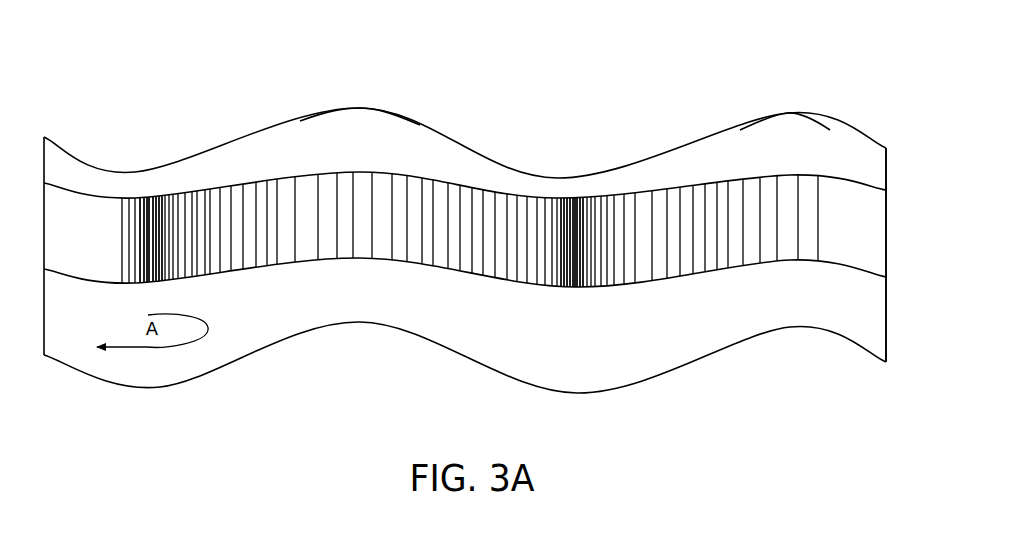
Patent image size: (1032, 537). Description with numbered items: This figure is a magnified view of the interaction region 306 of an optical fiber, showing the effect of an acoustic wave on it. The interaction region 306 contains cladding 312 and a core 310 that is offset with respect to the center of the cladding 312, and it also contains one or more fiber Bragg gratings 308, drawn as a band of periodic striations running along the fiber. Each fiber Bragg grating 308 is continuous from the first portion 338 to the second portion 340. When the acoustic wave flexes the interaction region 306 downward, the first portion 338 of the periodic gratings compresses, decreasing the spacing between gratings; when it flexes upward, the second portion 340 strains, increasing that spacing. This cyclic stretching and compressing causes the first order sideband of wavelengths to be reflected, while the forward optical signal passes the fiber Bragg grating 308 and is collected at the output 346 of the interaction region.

The interaction region 306 is at (457, 73).
The fiber Bragg grating 308 is at (122, 220).
The core 310 is at (80, 222).
The cladding 312 is at (472, 297).
The first portion 338 is at (150, 212).
The second portion 340 is at (349, 152).
The output 346 is at (862, 255).